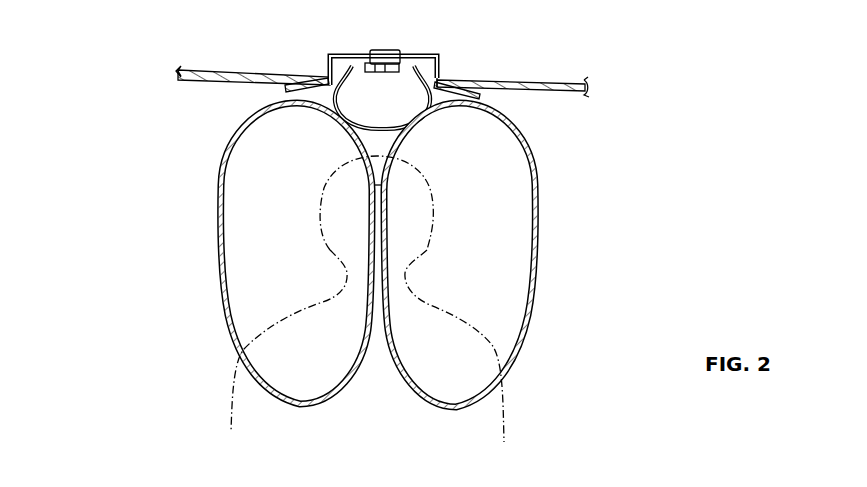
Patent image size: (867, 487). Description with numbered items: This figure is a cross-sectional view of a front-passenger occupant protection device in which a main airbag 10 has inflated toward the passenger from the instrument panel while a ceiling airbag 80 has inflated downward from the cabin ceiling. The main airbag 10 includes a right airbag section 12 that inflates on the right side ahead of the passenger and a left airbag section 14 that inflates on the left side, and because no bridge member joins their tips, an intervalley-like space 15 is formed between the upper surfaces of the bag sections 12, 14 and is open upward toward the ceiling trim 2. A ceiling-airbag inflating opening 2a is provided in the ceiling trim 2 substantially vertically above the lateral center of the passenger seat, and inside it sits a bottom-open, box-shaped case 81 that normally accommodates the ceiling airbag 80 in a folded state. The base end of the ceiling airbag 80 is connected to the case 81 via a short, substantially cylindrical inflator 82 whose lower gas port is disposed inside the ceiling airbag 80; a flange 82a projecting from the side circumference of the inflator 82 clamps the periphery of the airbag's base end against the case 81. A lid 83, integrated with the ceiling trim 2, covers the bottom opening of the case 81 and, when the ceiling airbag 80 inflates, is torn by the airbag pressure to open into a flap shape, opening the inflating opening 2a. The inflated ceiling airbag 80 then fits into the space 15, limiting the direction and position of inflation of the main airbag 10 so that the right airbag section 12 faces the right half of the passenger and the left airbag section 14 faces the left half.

The ceiling trim 2 is at (552, 80).
The ceiling-airbag inflating opening 2a is at (437, 62).
The main airbag 10 is at (404, 255).
The right airbag section 12 is at (537, 182).
The left airbag section 14 is at (225, 164).
The intervalley-like space 15 is at (393, 146).
The ceiling airbag 80 is at (357, 90).
The case 81 is at (330, 60).
The inflator 82 is at (387, 52).
The flange 82a is at (378, 74).
The lid 83 is at (285, 88).